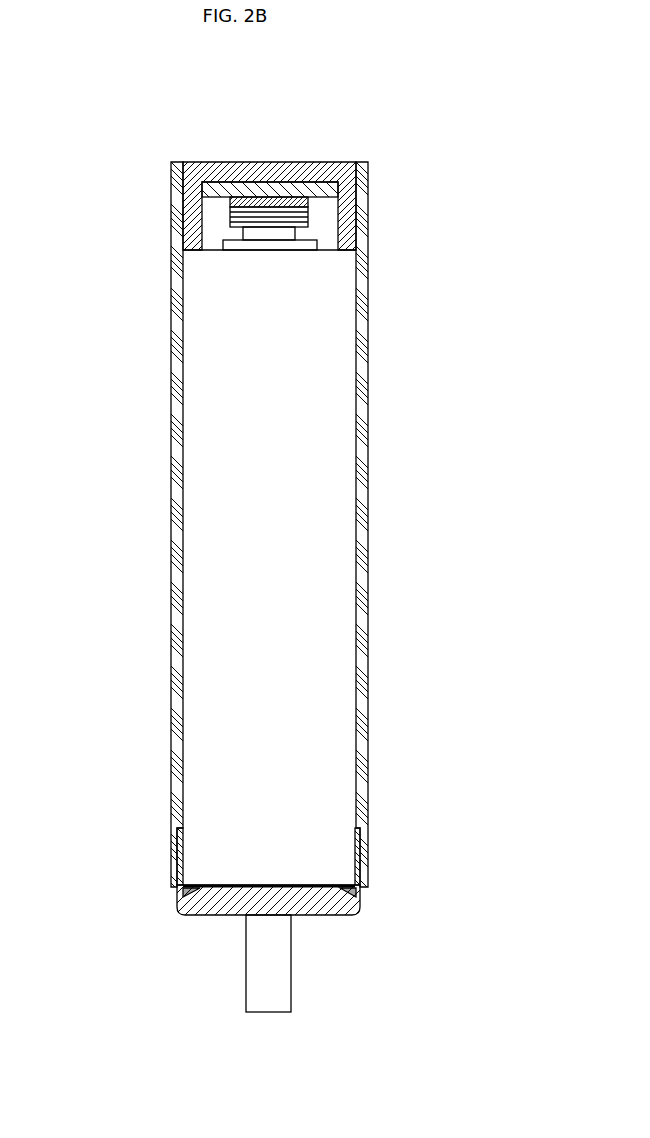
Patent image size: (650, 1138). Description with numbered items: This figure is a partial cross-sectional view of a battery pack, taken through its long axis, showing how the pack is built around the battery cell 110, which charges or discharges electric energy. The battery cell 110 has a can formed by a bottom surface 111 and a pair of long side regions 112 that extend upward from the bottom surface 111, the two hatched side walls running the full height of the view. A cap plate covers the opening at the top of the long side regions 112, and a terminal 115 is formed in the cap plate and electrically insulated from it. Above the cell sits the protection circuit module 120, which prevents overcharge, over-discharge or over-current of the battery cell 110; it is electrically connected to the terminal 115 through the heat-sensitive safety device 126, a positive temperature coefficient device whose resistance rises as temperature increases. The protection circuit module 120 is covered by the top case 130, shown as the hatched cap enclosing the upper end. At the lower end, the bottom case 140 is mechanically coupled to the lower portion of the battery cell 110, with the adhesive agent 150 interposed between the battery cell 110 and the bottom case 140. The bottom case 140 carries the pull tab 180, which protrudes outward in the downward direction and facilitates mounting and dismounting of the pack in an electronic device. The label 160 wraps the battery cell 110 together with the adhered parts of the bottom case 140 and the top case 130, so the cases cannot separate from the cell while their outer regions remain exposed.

The battery cell 110 is at (345, 497).
The bottom surface 111 is at (190, 917).
The long side regions 112 is at (172, 633).
The terminal 115 is at (283, 242).
The protection circuit module 120 is at (233, 168).
The heat-sensitive safety device 126 is at (208, 217).
The top case 130 is at (308, 170).
The bottom case 140 is at (220, 890).
The adhesive agent 150 is at (322, 895).
The label 160 is at (270, 524).
The pull tab 180 is at (283, 997).